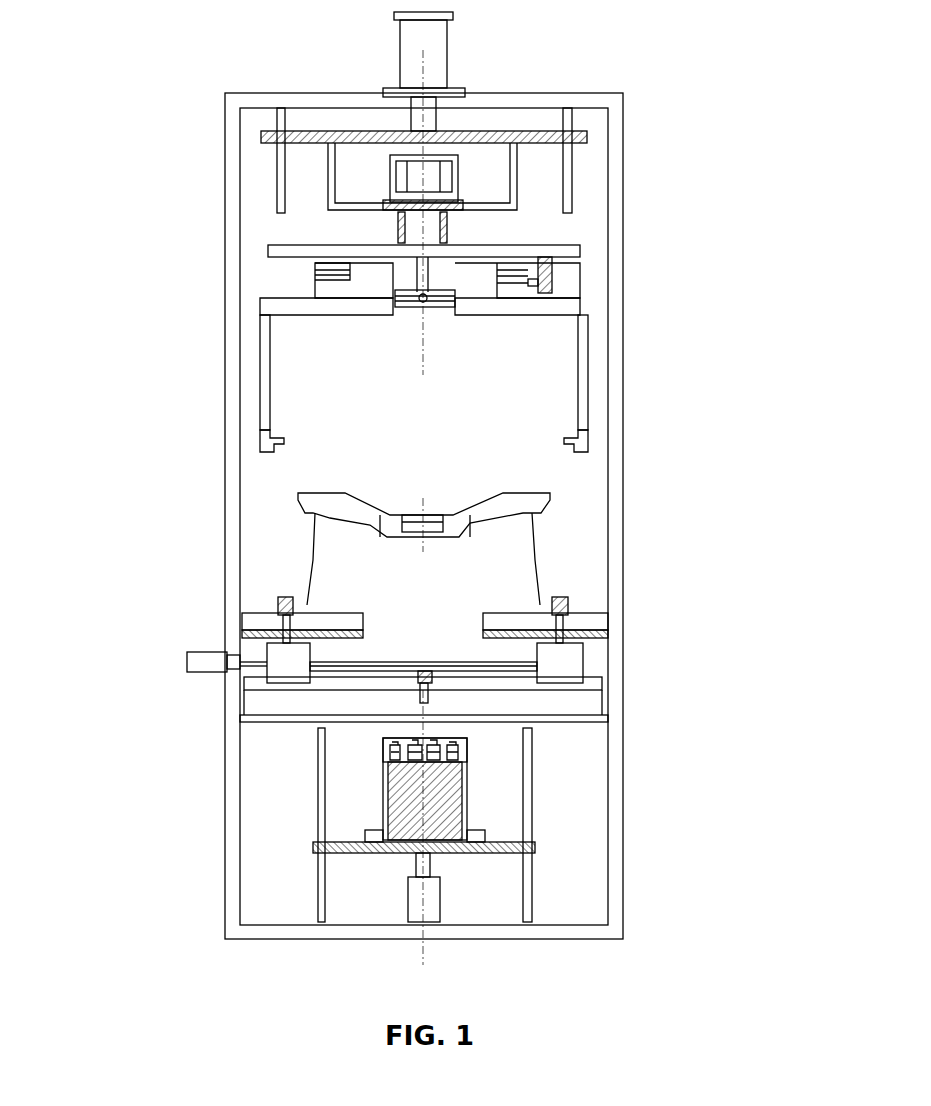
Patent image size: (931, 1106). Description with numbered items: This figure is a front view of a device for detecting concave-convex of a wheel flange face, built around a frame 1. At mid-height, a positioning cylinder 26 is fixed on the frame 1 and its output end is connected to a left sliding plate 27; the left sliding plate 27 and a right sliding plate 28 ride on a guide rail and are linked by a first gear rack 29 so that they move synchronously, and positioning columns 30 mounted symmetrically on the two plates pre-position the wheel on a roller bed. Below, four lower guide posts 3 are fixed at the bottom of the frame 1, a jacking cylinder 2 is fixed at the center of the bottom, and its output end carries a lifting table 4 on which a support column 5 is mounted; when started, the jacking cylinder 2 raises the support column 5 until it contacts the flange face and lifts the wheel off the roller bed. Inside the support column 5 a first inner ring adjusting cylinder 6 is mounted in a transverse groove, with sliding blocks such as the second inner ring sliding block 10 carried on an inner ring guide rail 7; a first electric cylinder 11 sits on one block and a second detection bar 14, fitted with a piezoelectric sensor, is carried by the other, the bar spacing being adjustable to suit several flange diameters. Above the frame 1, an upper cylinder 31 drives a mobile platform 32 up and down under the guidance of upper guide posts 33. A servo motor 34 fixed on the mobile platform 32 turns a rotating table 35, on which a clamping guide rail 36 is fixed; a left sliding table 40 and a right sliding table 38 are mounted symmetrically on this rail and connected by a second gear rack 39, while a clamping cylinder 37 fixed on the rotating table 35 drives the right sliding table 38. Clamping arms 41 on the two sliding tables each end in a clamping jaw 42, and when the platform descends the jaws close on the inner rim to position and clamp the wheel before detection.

The frame 1 is at (233, 913).
The jacking cylinder 2 is at (407, 902).
The lower guide posts 3 is at (318, 833).
The lifting table 4 is at (490, 842).
The support column 5 is at (385, 797).
The first inner ring adjusting cylinder 6 is at (385, 768).
The inner ring guide rail 7 is at (440, 752).
The second inner ring sliding block 10 is at (413, 742).
The first electric cylinder 11 is at (385, 742).
The second detection bar 14 is at (480, 716).
The positioning cylinder 26 is at (232, 664).
The left sliding plate 27 is at (277, 650).
The right sliding plate 28 is at (577, 653).
The first gear rack 29 is at (433, 672).
The positioning columns 30 is at (283, 598).
The upper cylinder 31 is at (400, 75).
The mobile platform 32 is at (586, 134).
The upper guide posts 33 is at (571, 190).
The servo motor 34 is at (413, 197).
The rotating table 35 is at (320, 240).
The clamping guide rail 36 is at (510, 262).
The clamping cylinder 37 is at (555, 273).
The right sliding table 38 is at (560, 312).
The second gear rack 39 is at (395, 302).
The left sliding table 40 is at (303, 307).
The clamping arms 41 is at (265, 370).
The clamping jaw 42 is at (265, 443).